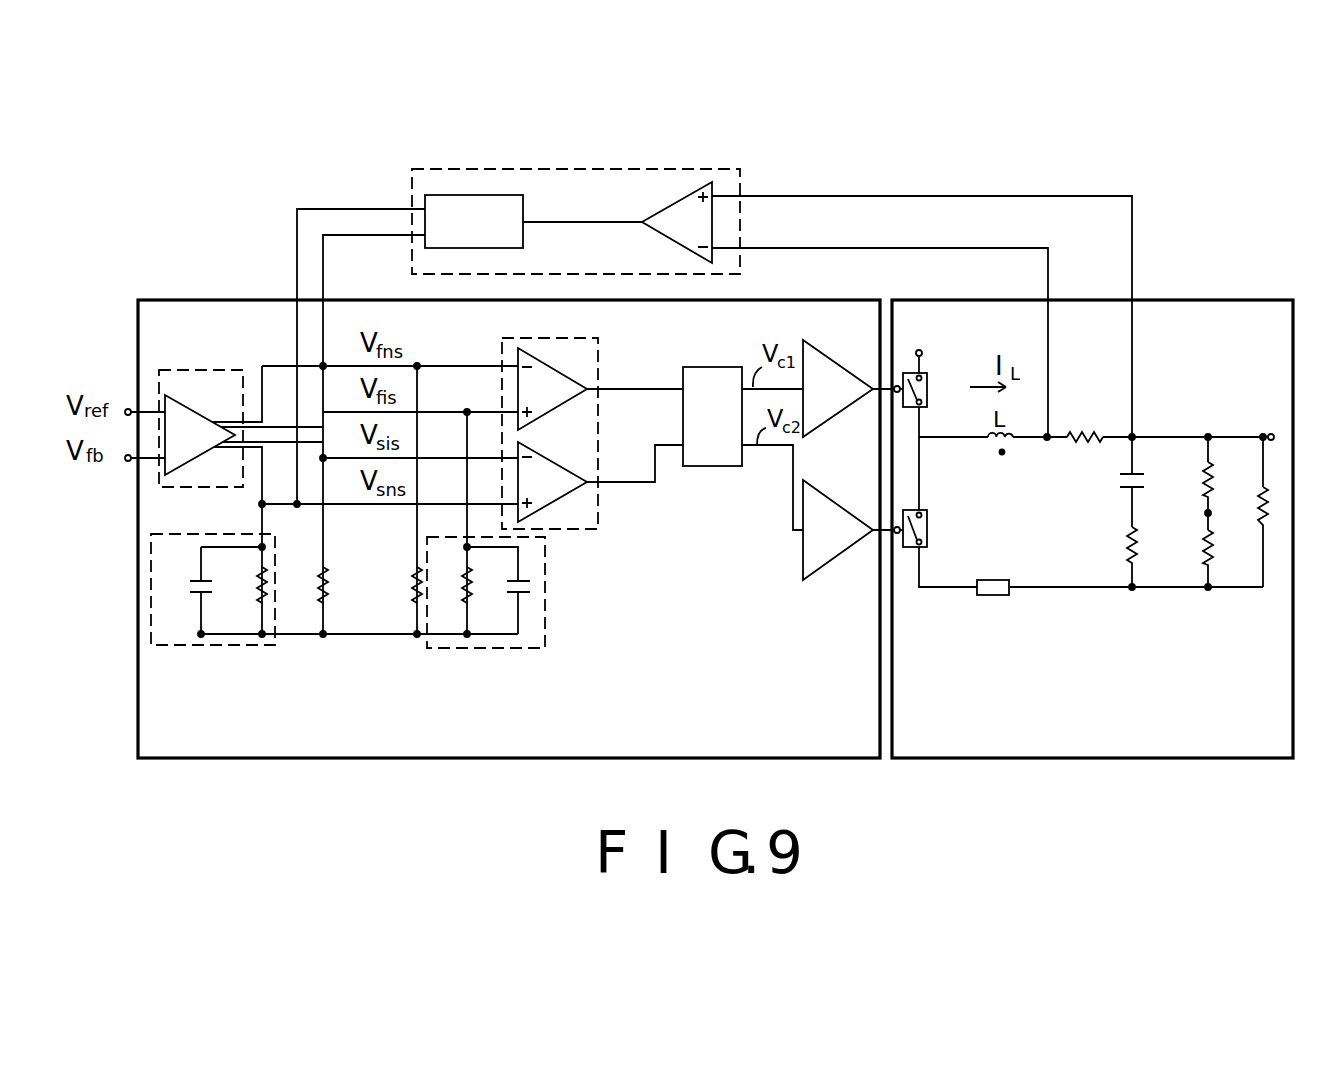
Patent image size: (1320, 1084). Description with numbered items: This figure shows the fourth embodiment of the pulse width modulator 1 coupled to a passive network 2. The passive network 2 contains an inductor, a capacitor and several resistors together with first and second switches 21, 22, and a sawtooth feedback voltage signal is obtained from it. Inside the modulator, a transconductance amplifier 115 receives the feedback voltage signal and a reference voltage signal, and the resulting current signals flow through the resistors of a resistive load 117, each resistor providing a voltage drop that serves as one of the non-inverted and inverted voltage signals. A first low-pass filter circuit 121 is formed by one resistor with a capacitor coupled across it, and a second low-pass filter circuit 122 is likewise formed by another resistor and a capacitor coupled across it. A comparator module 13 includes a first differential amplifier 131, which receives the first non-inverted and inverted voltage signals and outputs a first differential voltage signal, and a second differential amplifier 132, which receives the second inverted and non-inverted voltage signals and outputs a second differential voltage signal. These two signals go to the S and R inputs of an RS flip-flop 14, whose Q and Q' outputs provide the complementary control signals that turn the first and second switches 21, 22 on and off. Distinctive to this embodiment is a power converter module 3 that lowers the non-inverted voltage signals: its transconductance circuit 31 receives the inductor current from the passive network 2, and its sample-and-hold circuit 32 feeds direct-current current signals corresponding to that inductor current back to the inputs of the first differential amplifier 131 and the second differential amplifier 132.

The pulse width modulator 1 is at (783, 318).
The passive network 2 is at (1067, 310).
The power converter module 3 is at (652, 178).
The comparator module 13 is at (607, 347).
The flip-flop 14 is at (713, 374).
The first switch 21 is at (928, 395).
The second switch 22 is at (928, 535).
The transconductance circuit 31 is at (712, 200).
The sample-and-hold circuit 32 is at (518, 209).
The transconductance amplifier 115 is at (188, 374).
The resistive load 117 is at (450, 674).
The first low-pass filter circuit 121 is at (540, 623).
The second low-pass filter circuit 122 is at (177, 623).
The first differential amplifier 131 is at (552, 410).
The second differential amplifier 132 is at (555, 493).